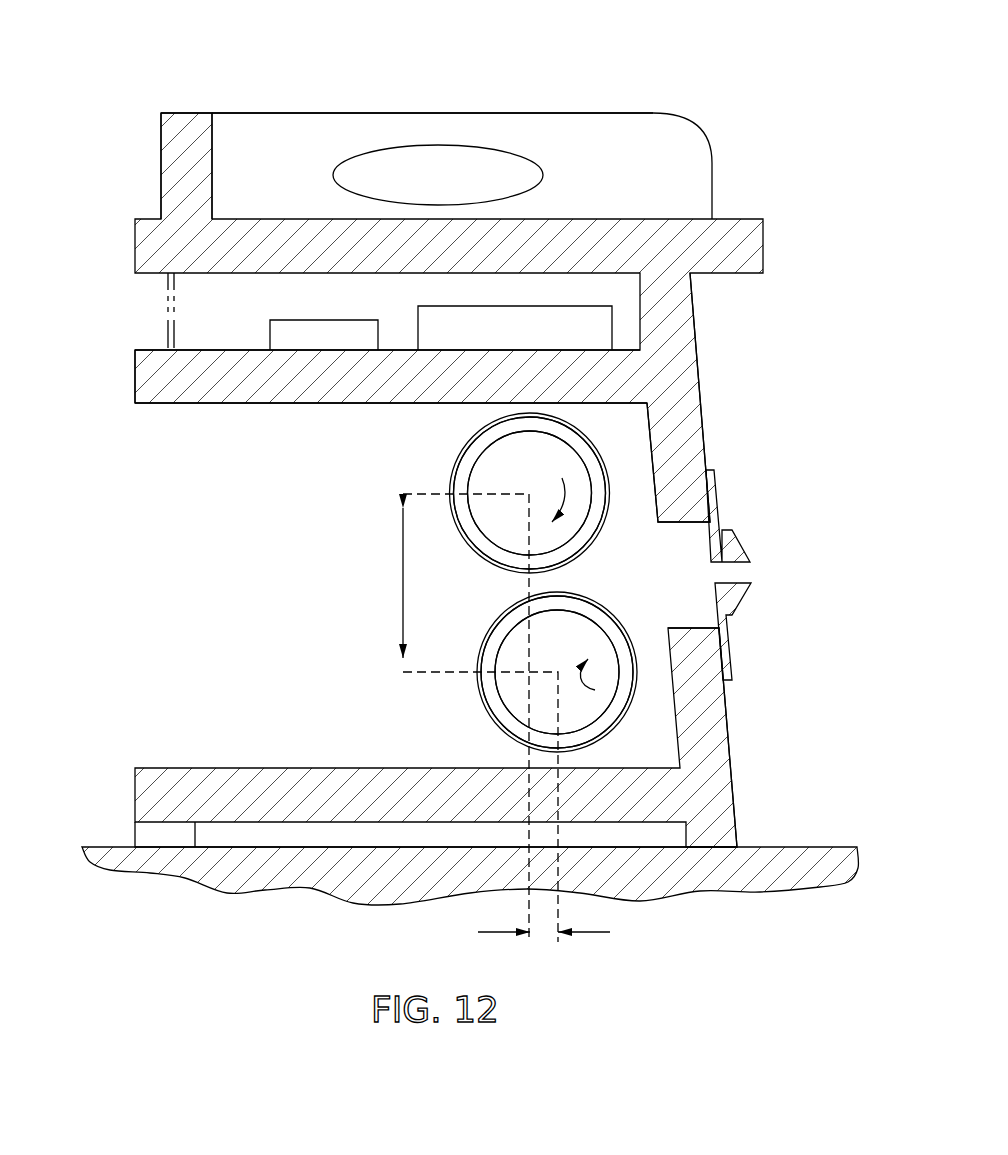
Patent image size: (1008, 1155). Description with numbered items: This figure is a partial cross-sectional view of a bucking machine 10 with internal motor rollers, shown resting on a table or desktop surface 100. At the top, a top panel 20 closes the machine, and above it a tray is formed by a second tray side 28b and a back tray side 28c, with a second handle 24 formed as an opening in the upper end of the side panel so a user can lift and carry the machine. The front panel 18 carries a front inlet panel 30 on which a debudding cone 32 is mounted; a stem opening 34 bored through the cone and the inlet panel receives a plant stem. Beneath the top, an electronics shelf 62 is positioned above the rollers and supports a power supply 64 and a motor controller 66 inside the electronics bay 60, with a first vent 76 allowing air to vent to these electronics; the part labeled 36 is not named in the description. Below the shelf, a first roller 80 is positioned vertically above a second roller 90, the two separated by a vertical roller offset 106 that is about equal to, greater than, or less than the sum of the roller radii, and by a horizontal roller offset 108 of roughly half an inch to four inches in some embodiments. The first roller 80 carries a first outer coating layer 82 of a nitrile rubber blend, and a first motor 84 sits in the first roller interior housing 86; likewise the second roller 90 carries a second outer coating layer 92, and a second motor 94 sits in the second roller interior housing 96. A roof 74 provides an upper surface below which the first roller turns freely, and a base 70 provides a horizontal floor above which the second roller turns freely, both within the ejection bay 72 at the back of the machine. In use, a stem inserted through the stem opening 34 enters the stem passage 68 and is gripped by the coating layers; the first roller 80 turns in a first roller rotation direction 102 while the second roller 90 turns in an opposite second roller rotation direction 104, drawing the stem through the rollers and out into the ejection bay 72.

The bucking machine 10 is at (738, 79).
The front panel 18 is at (703, 407).
The top panel 20 is at (296, 219).
The second handle 24 is at (458, 138).
The second tray side 28b is at (603, 186).
The back tray side 28c is at (162, 155).
The front inlet panel 30 is at (716, 486).
The debudding cone 32 is at (743, 600).
The stem opening 34 is at (752, 576).
The upper plate 36 is at (765, 243).
The electronics bay 60 is at (150, 300).
The electronics shelf 62 is at (148, 350).
The power supply 64 is at (418, 318).
The motor controller 66 is at (365, 320).
The stem passage 68 is at (588, 586).
The base 70 is at (160, 768).
The ejection bay 72 is at (133, 540).
The roof 74 is at (160, 390).
The first vent 76 is at (182, 305).
The first roller 80 is at (437, 440).
The first outer coating layer 82 is at (462, 450).
The first motor 84 is at (515, 470).
The first roller interior housing 86 is at (590, 474).
The second roller 90 is at (478, 738).
The second outer coating layer 92 is at (480, 695).
The second motor 94 is at (542, 649).
The second roller interior housing 96 is at (620, 704).
The surface 100 is at (795, 847).
The first roller rotation direction 102 is at (567, 498).
The second roller rotation direction 104 is at (575, 700).
The vertical roller offset 106 is at (429, 718).
The horizontal roller offset 108 is at (585, 932).